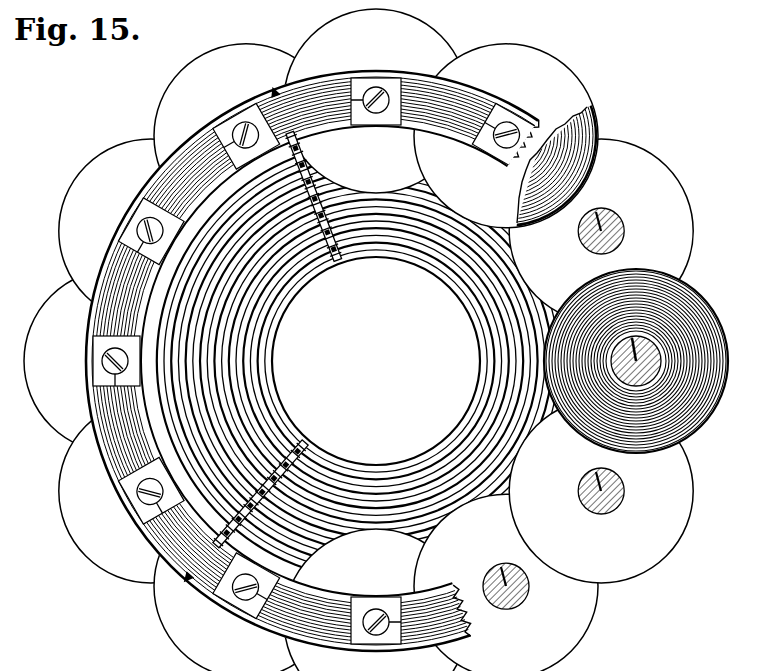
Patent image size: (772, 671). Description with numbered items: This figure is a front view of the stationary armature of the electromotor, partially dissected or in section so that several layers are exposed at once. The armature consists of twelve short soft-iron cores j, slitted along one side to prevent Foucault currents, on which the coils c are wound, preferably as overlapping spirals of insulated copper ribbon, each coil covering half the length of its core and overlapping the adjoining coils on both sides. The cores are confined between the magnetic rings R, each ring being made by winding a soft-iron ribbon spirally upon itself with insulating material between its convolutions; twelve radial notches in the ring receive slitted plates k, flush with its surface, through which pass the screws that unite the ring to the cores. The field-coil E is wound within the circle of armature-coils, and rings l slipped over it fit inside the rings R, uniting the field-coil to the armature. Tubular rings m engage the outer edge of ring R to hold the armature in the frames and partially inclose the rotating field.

The field-coil E is at (472, 435).
The magnetic ring R is at (460, 104).
The tubular ring m is at (213, 130).
The plate k is at (316, 353).
The ring l is at (300, 141).
The armature coil c is at (724, 403).
The core j is at (612, 237).